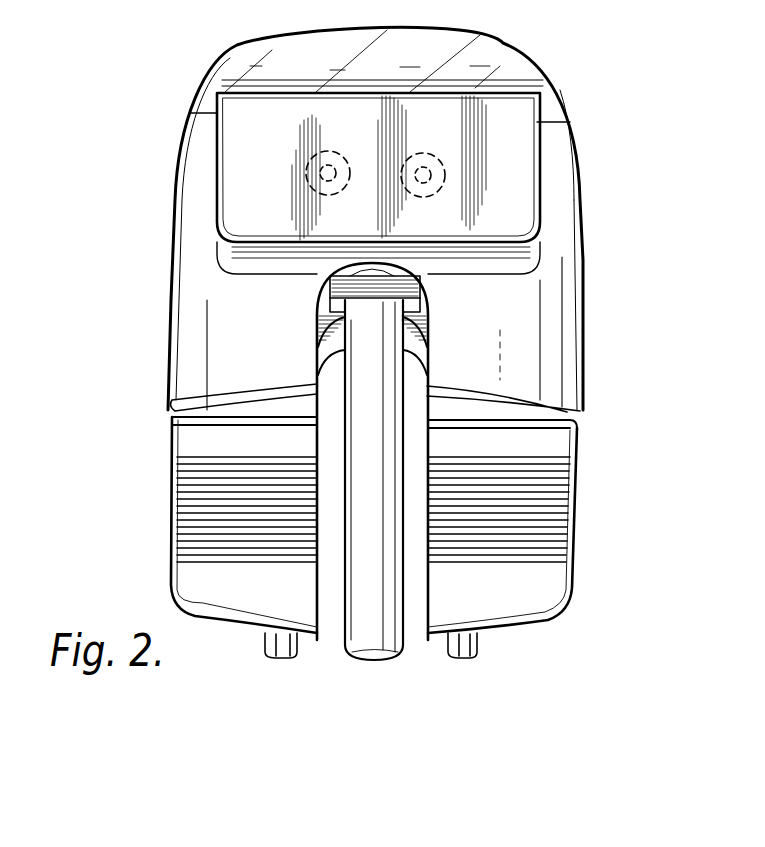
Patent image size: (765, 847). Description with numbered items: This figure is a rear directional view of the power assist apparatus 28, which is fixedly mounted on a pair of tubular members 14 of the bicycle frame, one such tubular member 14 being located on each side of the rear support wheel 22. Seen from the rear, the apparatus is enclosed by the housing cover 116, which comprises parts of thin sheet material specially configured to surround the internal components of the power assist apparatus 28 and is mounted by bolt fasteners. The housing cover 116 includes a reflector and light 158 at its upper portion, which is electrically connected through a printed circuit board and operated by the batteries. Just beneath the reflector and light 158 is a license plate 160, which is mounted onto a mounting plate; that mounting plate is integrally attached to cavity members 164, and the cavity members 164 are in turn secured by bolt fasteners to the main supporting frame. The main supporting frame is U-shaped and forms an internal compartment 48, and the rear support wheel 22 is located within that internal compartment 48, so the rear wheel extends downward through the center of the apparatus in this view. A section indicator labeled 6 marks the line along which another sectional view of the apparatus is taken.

The reflector and light 158 is at (337, 42).
The cavity members 164 is at (306, 173).
The license plate 160 is at (233, 158).
The power assist apparatus 28 is at (586, 191).
The housing cover 116 is at (560, 347).
The rear support wheel 22 is at (365, 383).
The internal compartment 48 is at (318, 615).
The tubular members 14 is at (265, 650).
The section line 6 is at (368, 670).